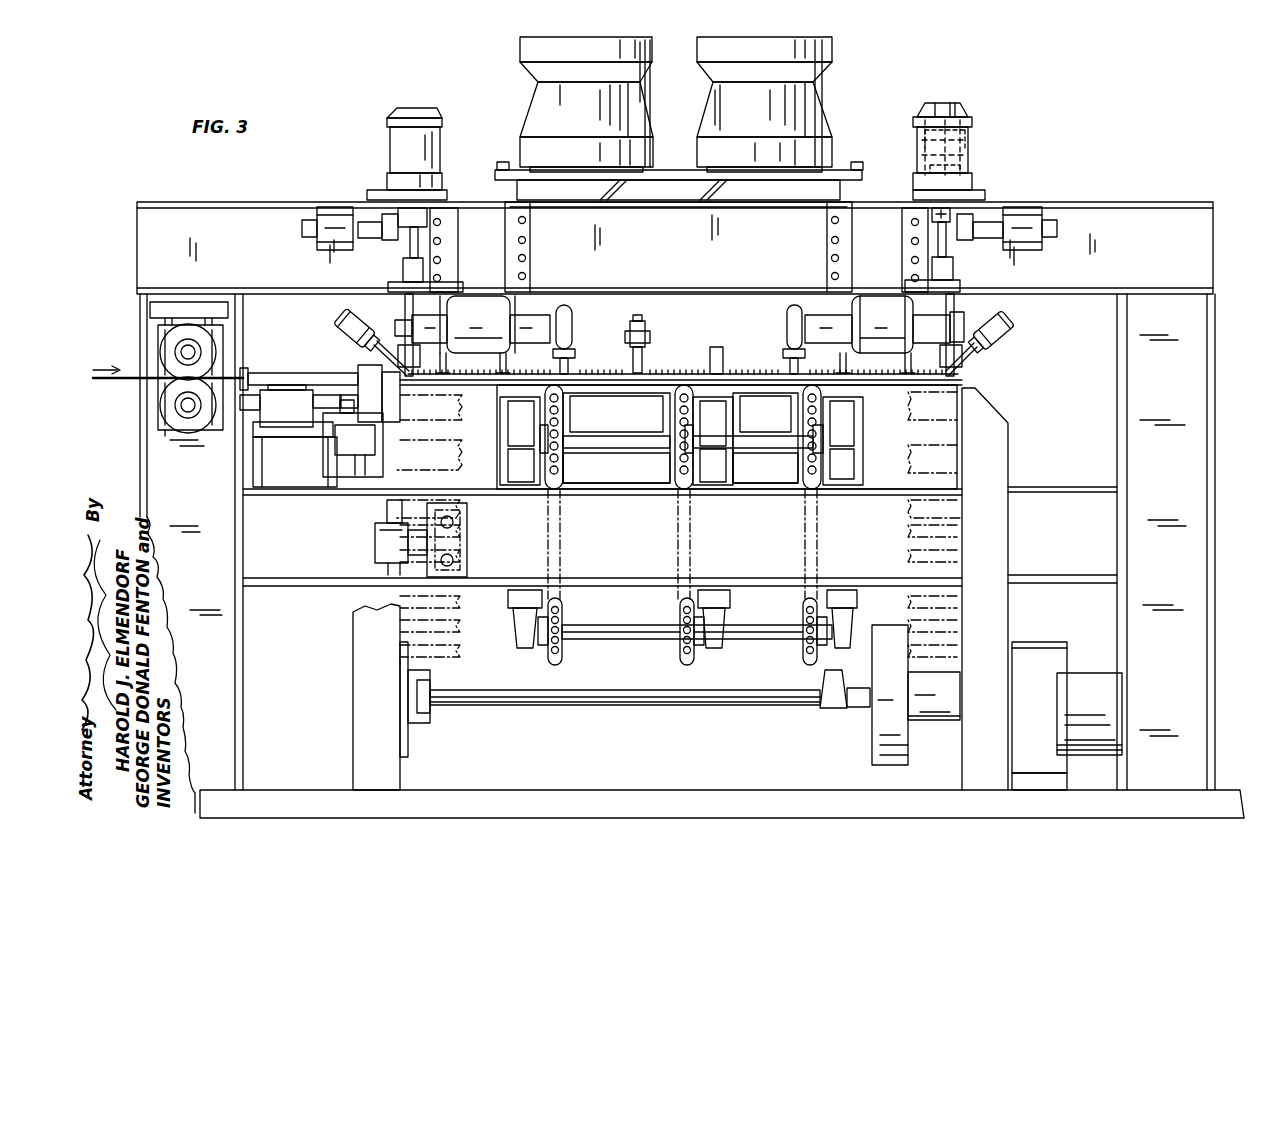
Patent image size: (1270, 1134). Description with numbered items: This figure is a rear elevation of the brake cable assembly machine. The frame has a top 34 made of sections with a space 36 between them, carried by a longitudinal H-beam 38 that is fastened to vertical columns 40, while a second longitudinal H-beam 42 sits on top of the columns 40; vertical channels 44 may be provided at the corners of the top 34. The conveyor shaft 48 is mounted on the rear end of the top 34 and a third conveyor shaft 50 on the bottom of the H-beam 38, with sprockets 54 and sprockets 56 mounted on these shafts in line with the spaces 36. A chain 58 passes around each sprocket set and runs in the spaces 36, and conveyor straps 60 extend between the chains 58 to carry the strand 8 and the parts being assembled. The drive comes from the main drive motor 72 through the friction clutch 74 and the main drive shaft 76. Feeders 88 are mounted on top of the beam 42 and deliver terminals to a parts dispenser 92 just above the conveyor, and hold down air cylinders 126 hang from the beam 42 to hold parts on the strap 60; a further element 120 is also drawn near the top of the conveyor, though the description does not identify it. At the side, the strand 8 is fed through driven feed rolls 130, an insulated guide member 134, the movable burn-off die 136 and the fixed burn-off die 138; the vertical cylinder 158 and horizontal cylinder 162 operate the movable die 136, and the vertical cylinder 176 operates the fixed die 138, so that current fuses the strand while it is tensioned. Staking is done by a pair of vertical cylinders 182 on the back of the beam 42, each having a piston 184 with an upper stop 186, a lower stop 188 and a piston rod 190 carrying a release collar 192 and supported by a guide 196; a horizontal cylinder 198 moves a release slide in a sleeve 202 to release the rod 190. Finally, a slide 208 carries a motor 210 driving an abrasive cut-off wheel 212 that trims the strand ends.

The strand 8 is at (112, 381).
The top 34 is at (752, 388).
The space 36 is at (568, 416).
The longitudinal H-beam 38 is at (1082, 575).
The vertical columns 40 is at (160, 491).
The second longitudinal H-beam 42 is at (238, 210).
The vertical channels 44 is at (355, 650).
The conveyor shaft 48 is at (632, 449).
The third conveyor shaft 50 is at (646, 640).
The sprockets 54 is at (563, 465).
The sprockets 56 is at (560, 656).
The chain 58 is at (560, 539).
The conveyor straps 60 is at (486, 388).
The main drive motor 72 is at (1080, 686).
The friction clutch 74 is at (905, 745).
The main drive shaft 76 is at (608, 707).
The feeders 88 is at (540, 105).
The parts dispenser 92 is at (393, 372).
The post 120 is at (723, 362).
The hold down air cylinders 126 is at (348, 330).
The driven feed rolls 130 is at (170, 343).
The insulated guide member 134 is at (270, 370).
The movable burn-off die 136 is at (358, 370).
The fixed burn-off die 138 is at (400, 408).
The vertical cylinder 158 is at (342, 447).
The horizontal cylinder 162 is at (292, 420).
The vertical cylinder 176 is at (375, 545).
The vertical cylinders 182 is at (398, 150).
The piston 184 is at (972, 138).
The stop 186 is at (918, 112).
The stop 188 is at (972, 166).
The piston rod 190 is at (418, 249).
The release collar 192 is at (428, 218).
The guide 196 is at (403, 266).
The horizontal cylinder 198 is at (325, 245).
The sleeve 202 is at (390, 230).
The slide 208 is at (470, 196).
The motor 210 is at (505, 316).
The abrasive cut-off wheel 212 is at (413, 312).